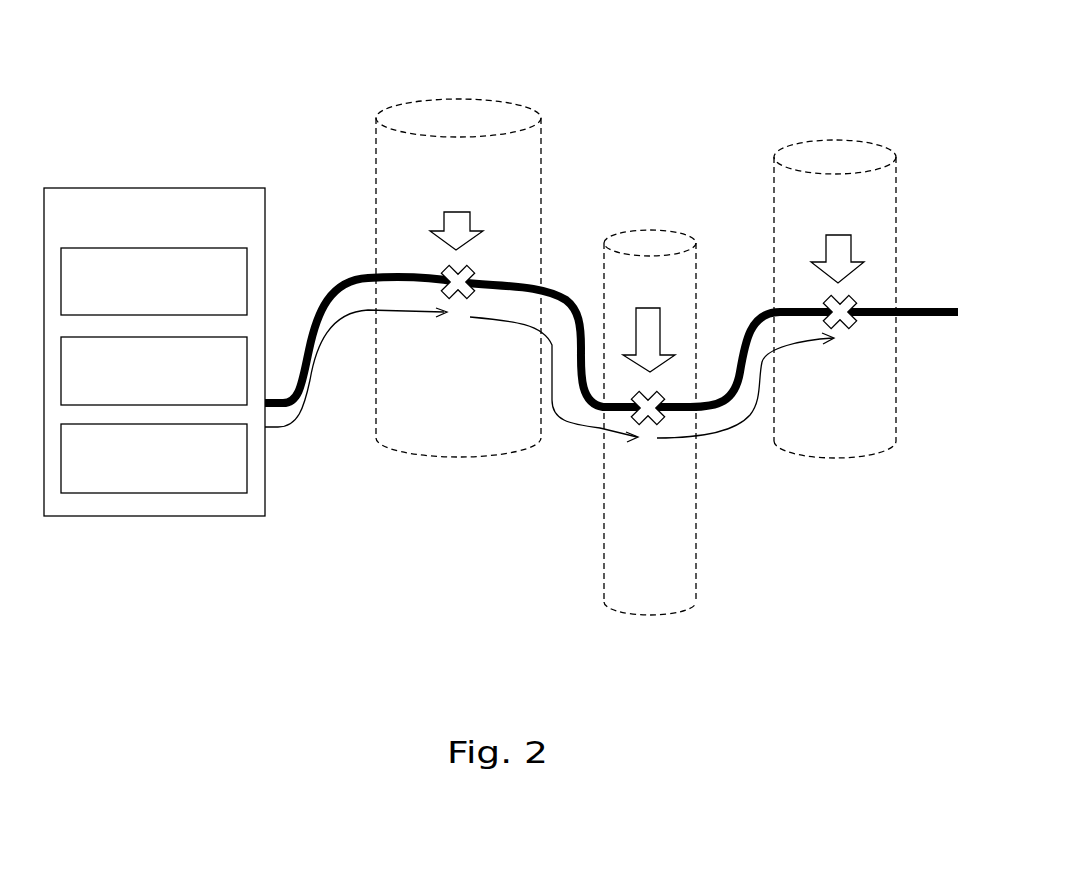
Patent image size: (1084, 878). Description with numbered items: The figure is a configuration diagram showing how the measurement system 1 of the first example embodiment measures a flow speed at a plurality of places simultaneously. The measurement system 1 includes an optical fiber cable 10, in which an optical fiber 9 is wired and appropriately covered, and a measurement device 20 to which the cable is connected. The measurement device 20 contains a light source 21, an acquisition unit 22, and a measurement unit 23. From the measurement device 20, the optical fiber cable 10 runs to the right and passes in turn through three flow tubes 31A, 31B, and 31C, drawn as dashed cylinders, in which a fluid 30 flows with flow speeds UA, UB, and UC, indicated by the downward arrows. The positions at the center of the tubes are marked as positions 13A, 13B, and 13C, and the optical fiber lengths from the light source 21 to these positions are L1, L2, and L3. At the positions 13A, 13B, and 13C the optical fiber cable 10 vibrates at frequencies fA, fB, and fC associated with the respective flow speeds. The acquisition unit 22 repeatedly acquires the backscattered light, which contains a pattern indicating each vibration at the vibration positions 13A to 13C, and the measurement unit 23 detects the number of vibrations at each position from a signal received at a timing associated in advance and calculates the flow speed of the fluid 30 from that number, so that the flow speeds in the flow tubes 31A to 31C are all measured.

The measurement system 1 is at (564, 41).
The optical fiber 9 is at (611, 339).
The optical fiber cable 10 is at (340, 283).
The position 13A is at (463, 297).
The position 13B is at (655, 423).
The position 13C is at (845, 332).
The measurement device 20 is at (236, 187).
The light source 21 is at (236, 280).
The acquisition unit 22 is at (237, 370).
The measurement unit 23 is at (237, 460).
The fluid 30 is at (609, 335).
The flow tube 31A is at (386, 100).
The flow tube 31B is at (618, 235).
The flow tube 31C is at (794, 146).